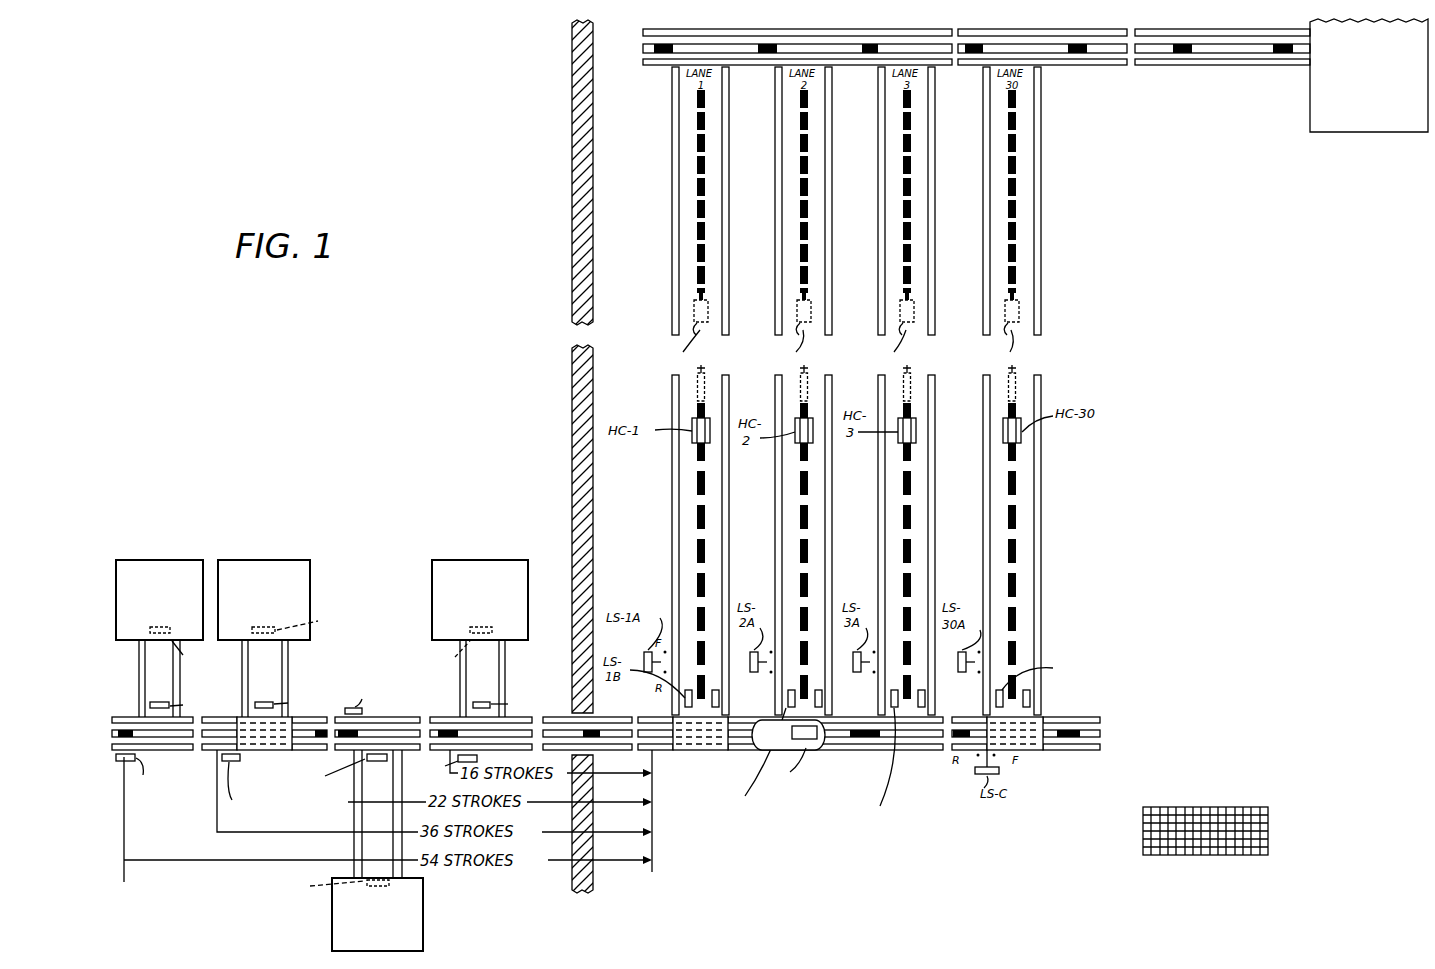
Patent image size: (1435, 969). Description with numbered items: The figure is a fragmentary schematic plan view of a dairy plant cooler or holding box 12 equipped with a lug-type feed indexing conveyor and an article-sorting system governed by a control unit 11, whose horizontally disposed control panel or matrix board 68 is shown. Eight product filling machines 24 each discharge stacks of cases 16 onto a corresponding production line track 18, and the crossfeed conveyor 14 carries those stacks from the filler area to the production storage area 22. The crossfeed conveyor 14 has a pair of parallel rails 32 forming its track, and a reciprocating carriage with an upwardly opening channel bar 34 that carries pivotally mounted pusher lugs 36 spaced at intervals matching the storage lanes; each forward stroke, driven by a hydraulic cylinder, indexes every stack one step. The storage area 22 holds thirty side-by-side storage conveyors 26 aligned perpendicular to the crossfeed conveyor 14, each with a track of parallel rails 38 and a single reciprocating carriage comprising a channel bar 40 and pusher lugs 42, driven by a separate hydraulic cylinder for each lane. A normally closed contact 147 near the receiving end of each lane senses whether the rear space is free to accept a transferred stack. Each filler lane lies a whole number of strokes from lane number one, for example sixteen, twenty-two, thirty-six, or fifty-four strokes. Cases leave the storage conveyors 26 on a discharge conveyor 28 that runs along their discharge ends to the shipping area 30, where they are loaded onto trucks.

The control unit 11 is at (1273, 822).
The dairy cooler or holding box 12 is at (1050, 197).
The crossfeed conveyor 14 is at (860, 748).
The stacks of cases 16 is at (264, 753).
The production line track 18 is at (160, 672).
The production storage area 22 is at (868, 162).
The product filling machine 24 is at (201, 561).
The storage conveyor 26 is at (690, 493).
The discharge conveyor 28 is at (1104, 53).
The shipping area 30 is at (1384, 87).
The rails 32 is at (822, 747).
The channel bar 34 is at (918, 738).
The pusher lugs 36 is at (650, 716).
The parallel rails 38 is at (774, 266).
The channel bar 40 is at (695, 226).
The pusher lugs 42 is at (800, 238).
The control panel or matrix board 68 is at (1208, 855).
The normally closed contact 147 is at (720, 698).